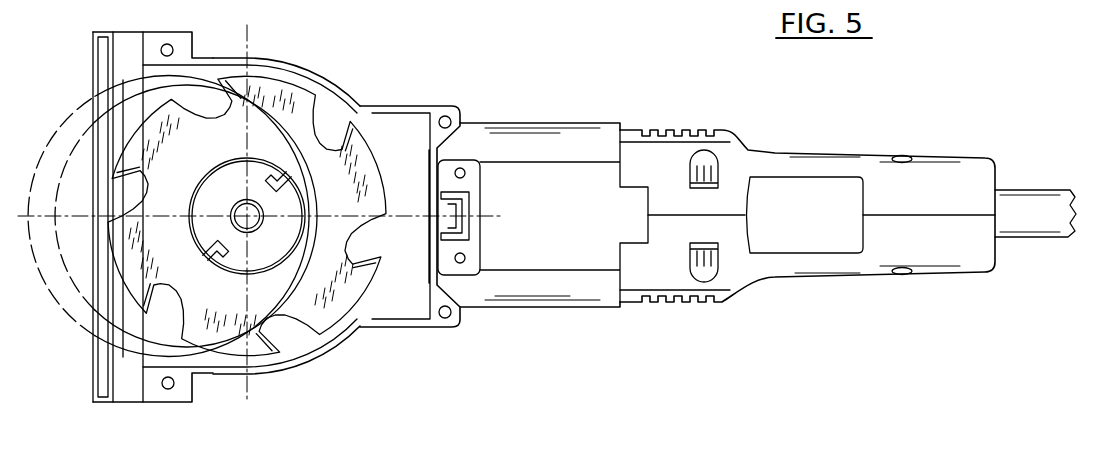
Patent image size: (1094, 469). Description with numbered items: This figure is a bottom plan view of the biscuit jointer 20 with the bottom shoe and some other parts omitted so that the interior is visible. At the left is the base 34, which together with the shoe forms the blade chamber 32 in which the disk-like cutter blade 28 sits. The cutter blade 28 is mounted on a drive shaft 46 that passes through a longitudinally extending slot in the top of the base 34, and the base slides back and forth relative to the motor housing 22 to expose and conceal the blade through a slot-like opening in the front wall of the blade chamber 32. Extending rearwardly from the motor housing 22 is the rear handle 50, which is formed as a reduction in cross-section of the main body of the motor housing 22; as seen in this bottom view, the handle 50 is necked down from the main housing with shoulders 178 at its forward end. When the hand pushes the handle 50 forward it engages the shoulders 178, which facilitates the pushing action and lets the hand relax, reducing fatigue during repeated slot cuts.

The biscuit jointer 20 is at (592, 78).
The motor housing 22 is at (597, 308).
The cutter blade 28 is at (225, 327).
The blade chamber 32 is at (297, 343).
The base 34 is at (327, 79).
The drive shaft 46 is at (240, 212).
The rear handle 50 is at (932, 180).
The shoulders 178 is at (745, 148).